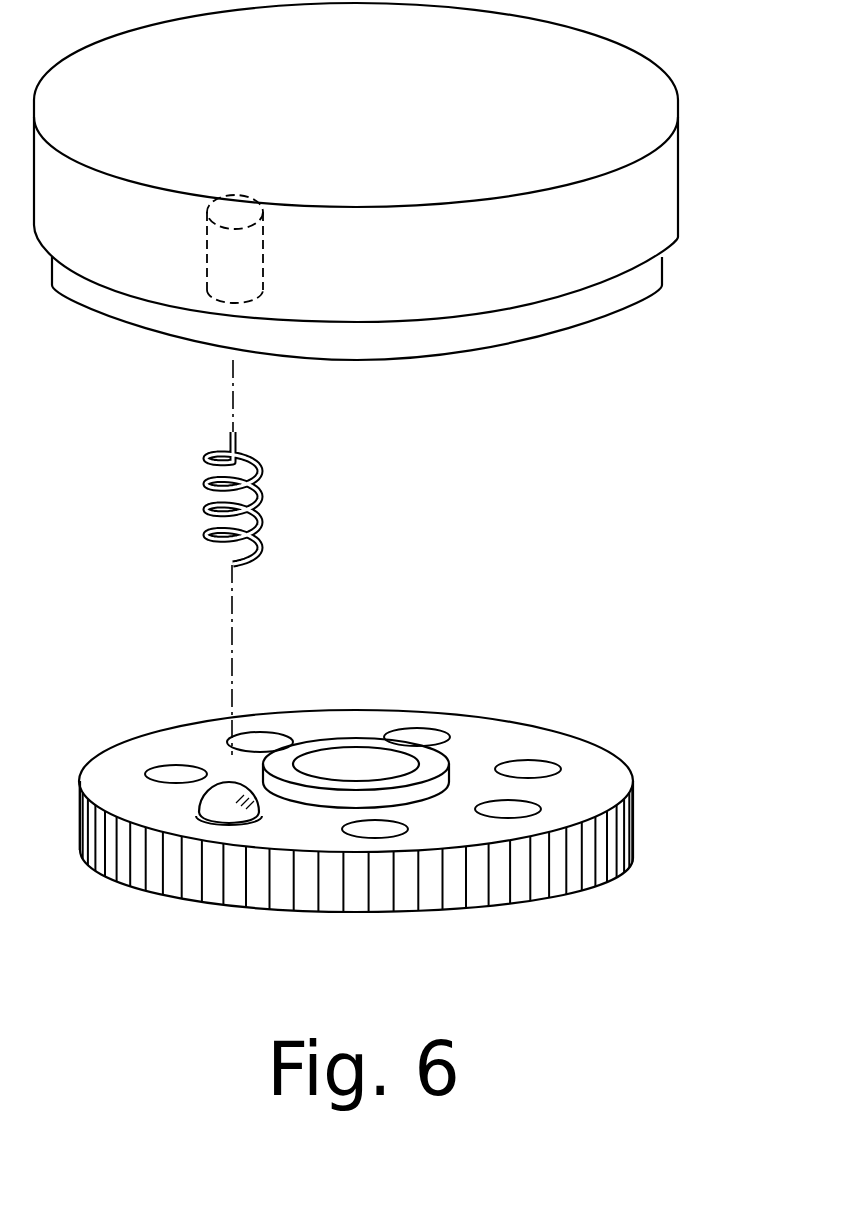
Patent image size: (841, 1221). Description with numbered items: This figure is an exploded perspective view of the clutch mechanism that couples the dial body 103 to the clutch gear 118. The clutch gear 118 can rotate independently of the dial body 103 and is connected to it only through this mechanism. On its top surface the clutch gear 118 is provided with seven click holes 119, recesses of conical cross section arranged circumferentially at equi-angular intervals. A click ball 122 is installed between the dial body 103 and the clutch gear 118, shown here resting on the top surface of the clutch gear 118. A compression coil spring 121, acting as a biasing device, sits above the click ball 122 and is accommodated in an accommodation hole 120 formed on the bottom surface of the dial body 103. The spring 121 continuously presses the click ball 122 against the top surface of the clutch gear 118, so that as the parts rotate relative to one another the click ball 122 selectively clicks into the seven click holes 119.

The dial body 103 is at (660, 206).
The clutch gear 118 is at (634, 843).
The click holes 119 is at (523, 762).
The accommodation hole 120 is at (263, 277).
The compression coil spring 121 is at (266, 513).
The click ball 122 is at (200, 795).